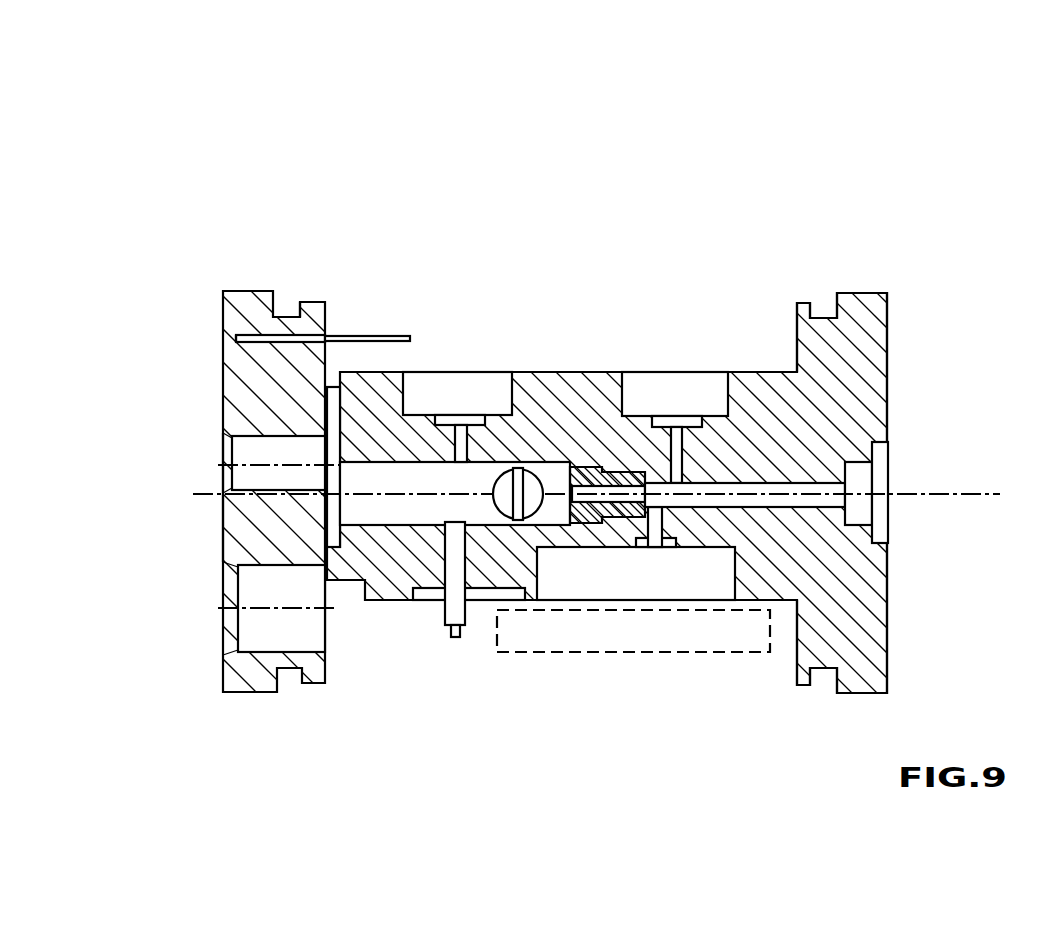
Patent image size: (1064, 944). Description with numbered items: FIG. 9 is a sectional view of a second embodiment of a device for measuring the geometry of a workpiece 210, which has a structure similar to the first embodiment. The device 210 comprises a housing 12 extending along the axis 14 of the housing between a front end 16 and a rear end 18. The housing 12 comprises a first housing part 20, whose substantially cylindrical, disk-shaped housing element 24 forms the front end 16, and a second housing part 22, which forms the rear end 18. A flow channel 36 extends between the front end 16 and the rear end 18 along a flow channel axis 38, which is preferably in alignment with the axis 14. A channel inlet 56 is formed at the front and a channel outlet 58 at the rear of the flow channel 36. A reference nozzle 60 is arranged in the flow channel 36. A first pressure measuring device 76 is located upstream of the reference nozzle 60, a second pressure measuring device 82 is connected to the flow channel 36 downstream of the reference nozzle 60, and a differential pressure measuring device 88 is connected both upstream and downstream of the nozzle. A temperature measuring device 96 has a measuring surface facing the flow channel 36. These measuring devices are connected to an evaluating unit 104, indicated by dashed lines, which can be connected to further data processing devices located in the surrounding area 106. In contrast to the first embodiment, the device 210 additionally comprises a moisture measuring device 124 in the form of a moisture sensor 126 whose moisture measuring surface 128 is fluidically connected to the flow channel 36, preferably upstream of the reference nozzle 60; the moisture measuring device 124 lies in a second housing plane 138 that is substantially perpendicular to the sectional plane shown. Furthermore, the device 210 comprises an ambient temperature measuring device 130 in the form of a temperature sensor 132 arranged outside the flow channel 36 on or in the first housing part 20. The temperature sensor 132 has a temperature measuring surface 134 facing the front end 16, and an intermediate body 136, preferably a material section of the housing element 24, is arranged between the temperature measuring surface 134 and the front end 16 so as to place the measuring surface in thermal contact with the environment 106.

The device for measuring the geometry of a workpiece 210 is at (466, 154).
The housing 12 is at (731, 236).
The rear end 18 is at (898, 328).
The flow channel 36 is at (375, 514).
The second housing part 22 is at (790, 652).
The flow channel axis 38 is at (403, 495).
The moisture measuring device 124 is at (529, 452).
The first pressure measuring device 76 is at (449, 387).
The second pressure measuring device 82 is at (694, 391).
The differential pressure measuring device 88 is at (622, 572).
The temperature measuring device 96 is at (468, 642).
The evaluating unit 104 is at (700, 632).
The reference nozzle 60 is at (599, 450).
The axis of the housing 14 is at (930, 495).
The channel outlet 58 is at (897, 519).
The second housing plane 138 is at (1000, 495).
The moisture sensor 126 is at (502, 486).
The moisture measuring surface 128 is at (513, 503).
The front end 16 is at (485, 472).
The housing element 24 is at (240, 398).
The first housing part 20 is at (254, 707).
The channel inlet 56 is at (210, 479).
The intermediate body 136 is at (281, 279).
The ambient temperature measuring device 130 is at (351, 322).
The temperature measuring surface 134 is at (240, 337).
The temperature sensor 132 is at (315, 330).
The surrounding area 106 is at (133, 660).